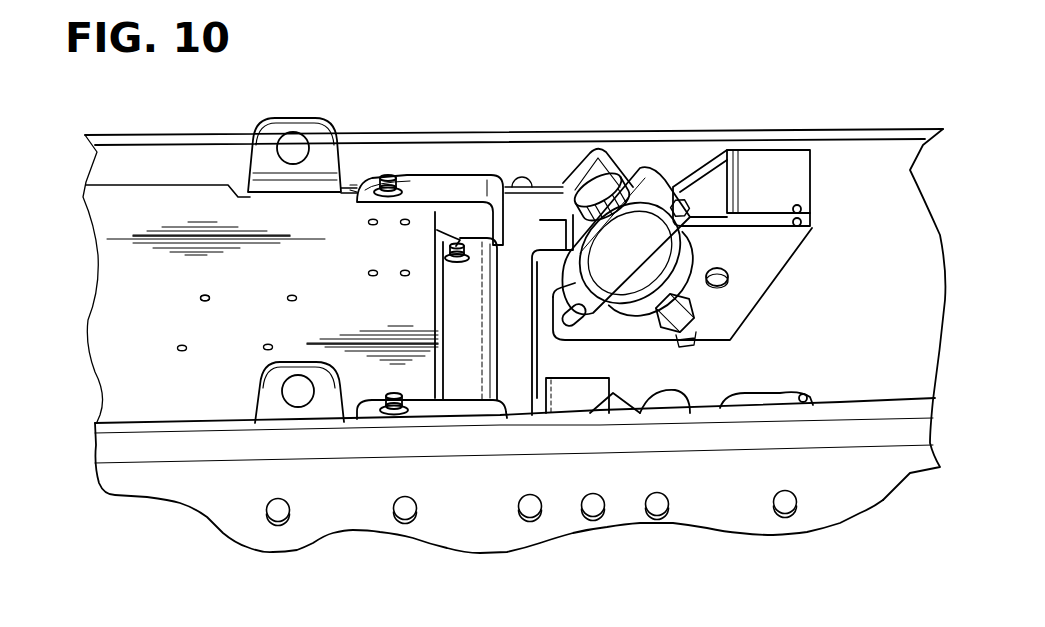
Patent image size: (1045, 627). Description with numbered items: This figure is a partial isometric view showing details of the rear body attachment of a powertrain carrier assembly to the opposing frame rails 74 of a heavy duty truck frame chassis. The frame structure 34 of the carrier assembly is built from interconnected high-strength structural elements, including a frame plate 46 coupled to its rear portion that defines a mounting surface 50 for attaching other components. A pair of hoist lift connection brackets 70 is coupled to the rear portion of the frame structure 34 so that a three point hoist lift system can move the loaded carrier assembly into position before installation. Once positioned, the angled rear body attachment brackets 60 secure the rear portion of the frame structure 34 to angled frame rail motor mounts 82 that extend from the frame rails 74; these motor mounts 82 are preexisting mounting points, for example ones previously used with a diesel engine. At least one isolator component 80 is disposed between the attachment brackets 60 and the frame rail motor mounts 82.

The frame structure 34 is at (112, 298).
The frame plate 46 is at (150, 200).
The mounting surface 50 is at (270, 283).
The angled rear body attachment bracket 60 is at (637, 183).
The hoist lift connection bracket 70 is at (293, 117).
The frame rail 74 is at (845, 132).
The isolator component 80 is at (668, 200).
The frame rail motor mount 82 is at (775, 163).